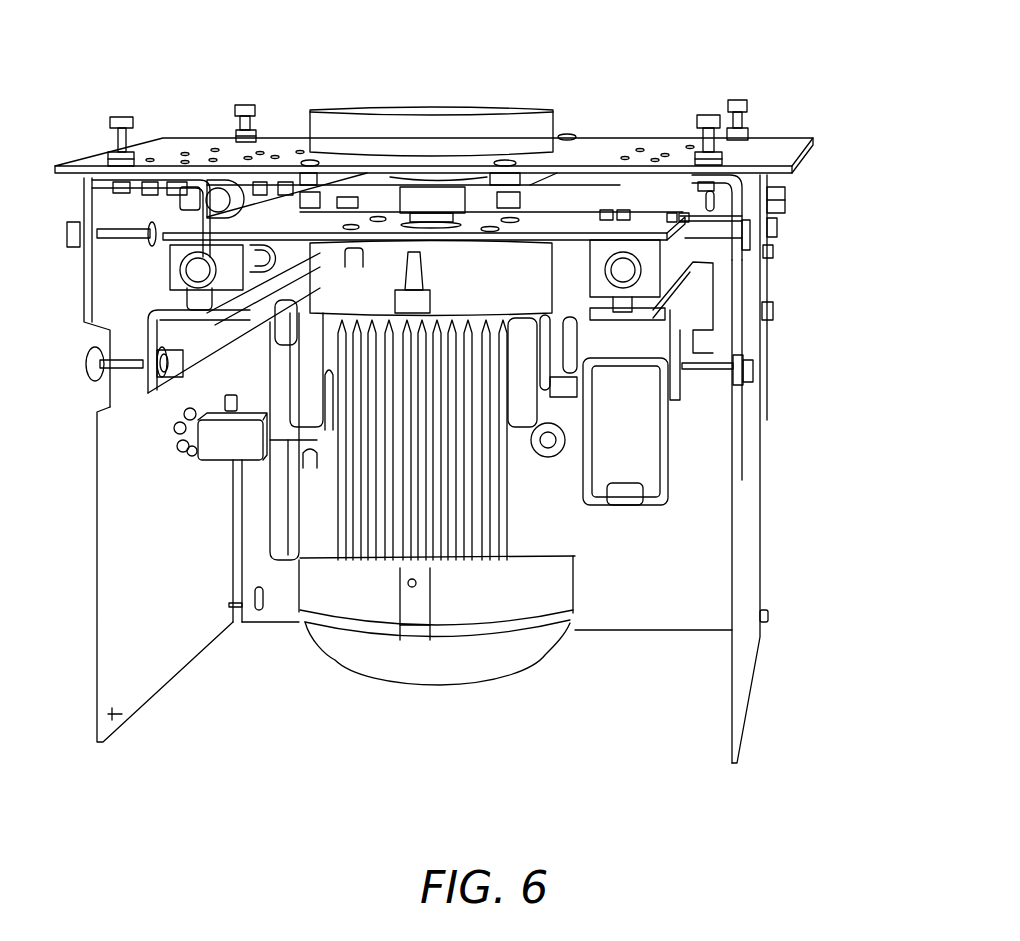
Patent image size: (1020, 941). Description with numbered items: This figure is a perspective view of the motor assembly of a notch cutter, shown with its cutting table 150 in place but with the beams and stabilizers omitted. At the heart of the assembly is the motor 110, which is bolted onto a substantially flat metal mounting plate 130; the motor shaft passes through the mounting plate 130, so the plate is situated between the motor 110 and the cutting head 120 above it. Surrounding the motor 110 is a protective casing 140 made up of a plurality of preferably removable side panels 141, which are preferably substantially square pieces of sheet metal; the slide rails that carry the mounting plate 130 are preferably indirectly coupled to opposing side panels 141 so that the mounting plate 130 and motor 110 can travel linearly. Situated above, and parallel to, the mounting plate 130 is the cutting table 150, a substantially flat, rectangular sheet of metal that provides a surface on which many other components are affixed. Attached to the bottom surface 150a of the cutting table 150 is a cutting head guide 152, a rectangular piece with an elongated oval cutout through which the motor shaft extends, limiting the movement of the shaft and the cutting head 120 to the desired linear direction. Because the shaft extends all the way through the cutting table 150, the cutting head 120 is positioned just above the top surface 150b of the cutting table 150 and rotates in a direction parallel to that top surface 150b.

The motor 110 is at (600, 676).
The cutting head 120 is at (444, 90).
The mounting plate 130 is at (625, 189).
The protective casing 140 is at (800, 467).
The side panels 141 is at (157, 643).
The cutting table 150 is at (782, 133).
The bottom surface 150a is at (768, 224).
The top surface 150b is at (593, 124).
The cutting head guide 152 is at (378, 185).